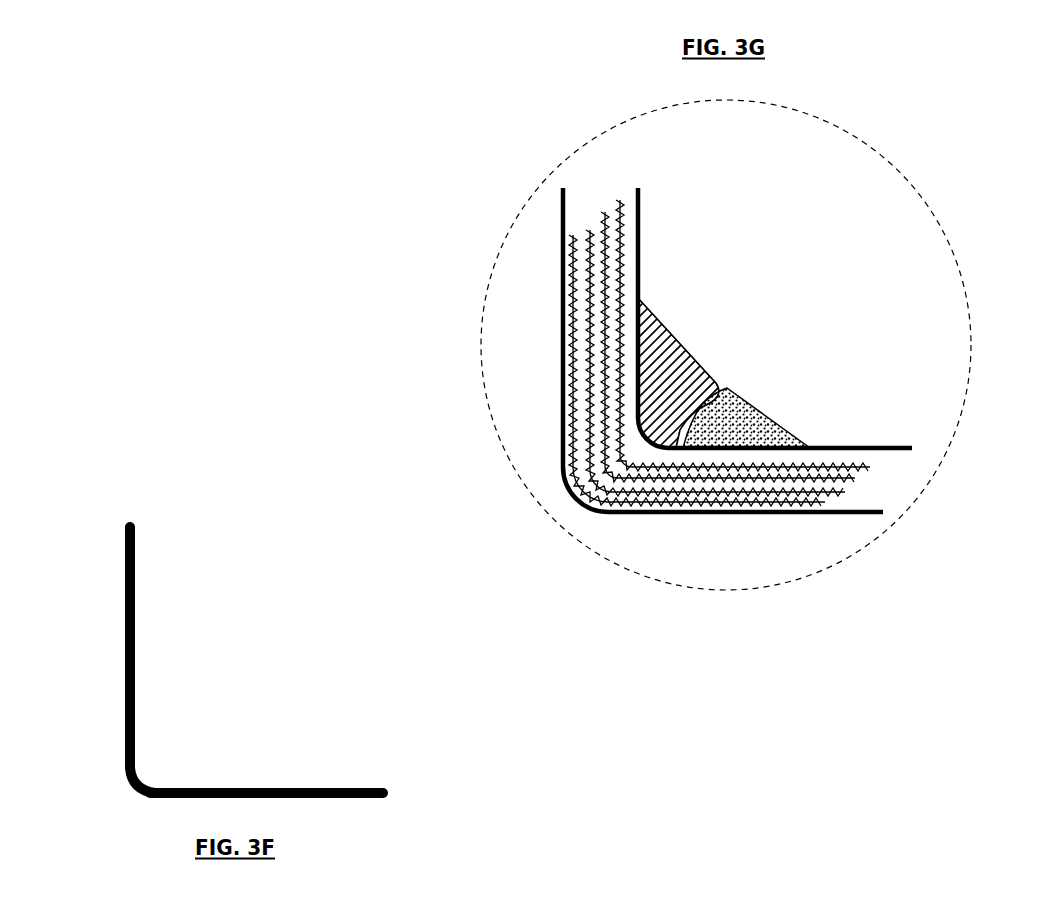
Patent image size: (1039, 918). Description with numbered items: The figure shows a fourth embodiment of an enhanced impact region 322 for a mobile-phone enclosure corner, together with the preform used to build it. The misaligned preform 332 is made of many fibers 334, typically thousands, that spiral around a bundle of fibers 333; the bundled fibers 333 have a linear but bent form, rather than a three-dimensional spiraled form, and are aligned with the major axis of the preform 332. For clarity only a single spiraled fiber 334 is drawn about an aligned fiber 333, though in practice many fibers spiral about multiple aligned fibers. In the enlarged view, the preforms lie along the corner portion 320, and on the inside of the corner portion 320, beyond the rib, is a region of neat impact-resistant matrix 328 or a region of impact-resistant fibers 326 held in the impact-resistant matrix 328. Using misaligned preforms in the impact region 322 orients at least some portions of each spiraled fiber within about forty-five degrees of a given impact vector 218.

In FIG. 3G, the impact vector 218 is at (707, 408).
In FIG. 3G, the corner portion 320 is at (605, 512).
In FIG. 3G, the impact region 322 is at (893, 167).
In FIG. 3G, the impact-resistant fibers 326 is at (692, 355).
In FIG. 3G, the impact-resistant matrix 328 is at (585, 367).
In FIG. 3F, the misaligned preform 332 is at (242, 680).
In FIG. 3G, the bundle of fibers 333 is at (641, 420).
In FIG. 3F, the bundle of fibers 333 is at (383, 792).
In FIG. 3G, the fibers 334 is at (562, 300).
In FIG. 3F, the fibers 334 is at (130, 758).